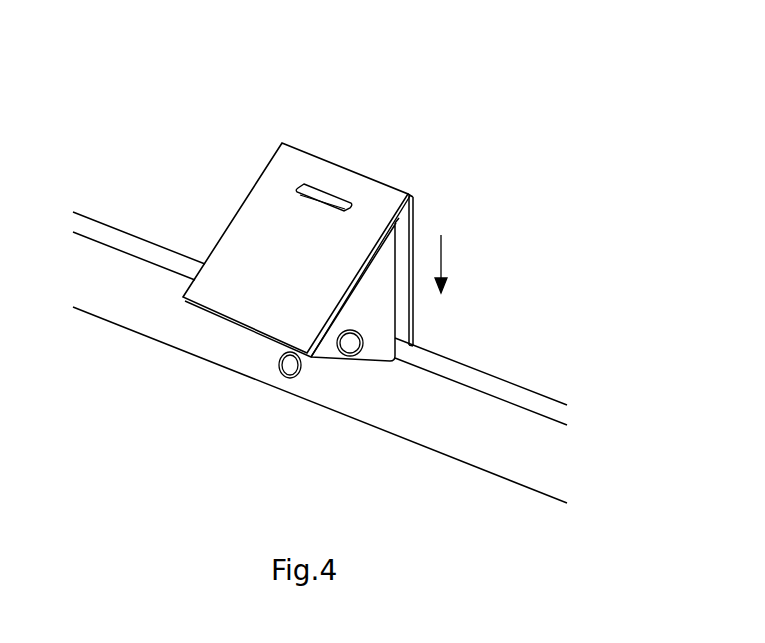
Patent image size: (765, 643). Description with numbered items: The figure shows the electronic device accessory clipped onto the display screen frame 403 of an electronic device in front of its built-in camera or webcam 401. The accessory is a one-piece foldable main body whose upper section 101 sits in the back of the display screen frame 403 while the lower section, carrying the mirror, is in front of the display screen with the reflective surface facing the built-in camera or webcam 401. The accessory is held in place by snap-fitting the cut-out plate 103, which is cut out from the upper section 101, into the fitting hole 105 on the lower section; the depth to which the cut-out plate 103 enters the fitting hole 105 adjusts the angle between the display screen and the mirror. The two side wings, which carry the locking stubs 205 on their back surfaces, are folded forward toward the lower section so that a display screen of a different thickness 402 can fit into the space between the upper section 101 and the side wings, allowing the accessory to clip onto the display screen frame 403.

The upper section 101 is at (334, 225).
The cut-out plate 103 is at (283, 197).
The fitting hole 105 is at (323, 192).
The locking stubs 205 is at (352, 347).
The built-in camera or webcam 401 is at (290, 372).
The thickness 402 is at (506, 384).
The display screen frame 403 is at (477, 448).